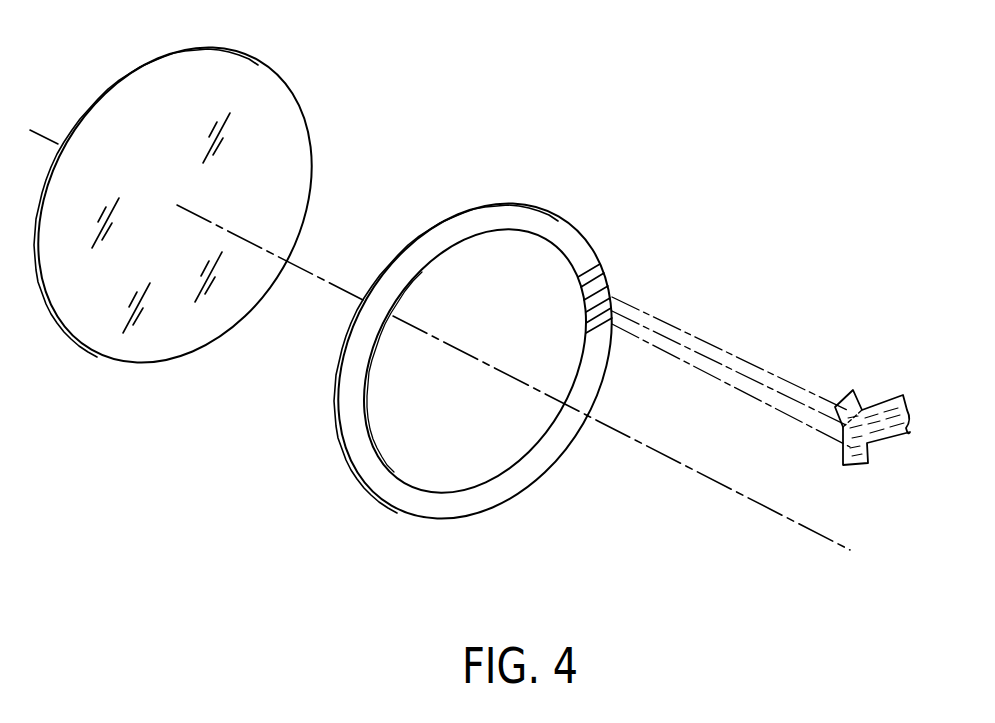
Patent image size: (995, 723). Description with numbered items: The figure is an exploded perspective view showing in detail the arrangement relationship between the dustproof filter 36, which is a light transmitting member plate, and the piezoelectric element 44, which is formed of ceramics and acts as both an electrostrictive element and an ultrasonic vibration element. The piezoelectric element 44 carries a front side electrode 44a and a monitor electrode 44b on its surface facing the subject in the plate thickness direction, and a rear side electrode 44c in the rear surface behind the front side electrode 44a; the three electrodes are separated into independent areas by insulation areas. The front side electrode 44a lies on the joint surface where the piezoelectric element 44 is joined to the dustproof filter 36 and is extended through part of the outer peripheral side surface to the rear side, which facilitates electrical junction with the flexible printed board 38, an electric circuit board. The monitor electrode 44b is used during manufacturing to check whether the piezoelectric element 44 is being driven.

The dustproof filter 36 is at (253, 72).
The piezoelectric element 44 is at (520, 220).
The front side electrode 44a is at (603, 280).
The monitor electrode 44b is at (613, 295).
The rear side electrode 44c is at (608, 327).
The flexible printed board 38 is at (882, 420).